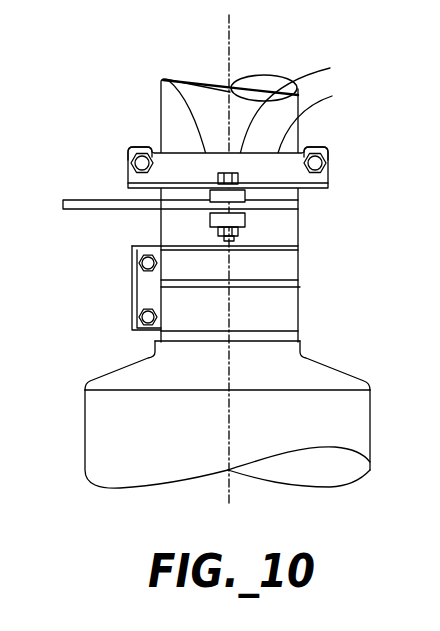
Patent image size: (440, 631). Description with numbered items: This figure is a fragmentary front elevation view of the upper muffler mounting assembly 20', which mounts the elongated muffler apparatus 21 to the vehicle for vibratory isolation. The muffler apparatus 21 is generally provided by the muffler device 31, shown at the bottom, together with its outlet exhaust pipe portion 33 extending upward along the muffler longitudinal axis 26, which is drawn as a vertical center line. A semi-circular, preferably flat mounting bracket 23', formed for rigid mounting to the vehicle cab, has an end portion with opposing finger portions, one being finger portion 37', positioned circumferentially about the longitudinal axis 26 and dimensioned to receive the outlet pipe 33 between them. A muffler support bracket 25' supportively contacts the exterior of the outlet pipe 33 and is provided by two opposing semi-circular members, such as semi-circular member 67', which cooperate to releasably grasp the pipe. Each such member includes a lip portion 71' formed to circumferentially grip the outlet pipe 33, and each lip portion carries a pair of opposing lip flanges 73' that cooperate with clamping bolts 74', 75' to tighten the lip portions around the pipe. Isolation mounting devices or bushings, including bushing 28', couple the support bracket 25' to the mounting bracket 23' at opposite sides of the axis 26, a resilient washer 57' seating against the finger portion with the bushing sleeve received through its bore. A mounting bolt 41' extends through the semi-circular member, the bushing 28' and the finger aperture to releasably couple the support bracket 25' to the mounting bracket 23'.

The upper muffler mounting assembly 20' is at (170, 189).
The muffler apparatus 21 is at (352, 362).
The mounting bracket 23' is at (166, 240).
The muffler support bracket 25' is at (147, 116).
The longitudinal axis 26 is at (231, 30).
The isolation mounting device 28' is at (291, 203).
The muffler device 31 is at (355, 408).
The outlet exhaust pipe portion 33 is at (298, 58).
The finger portion 37' is at (282, 229).
The mounting bolt 41' is at (300, 114).
The resilient washer 57' is at (116, 275).
The semi-circular member 67' is at (205, 106).
The lip portion 71' is at (321, 120).
The lip flange 73' is at (235, 135).
The clamping bolt 74' is at (111, 167).
The clamping bolt 75' is at (347, 161).